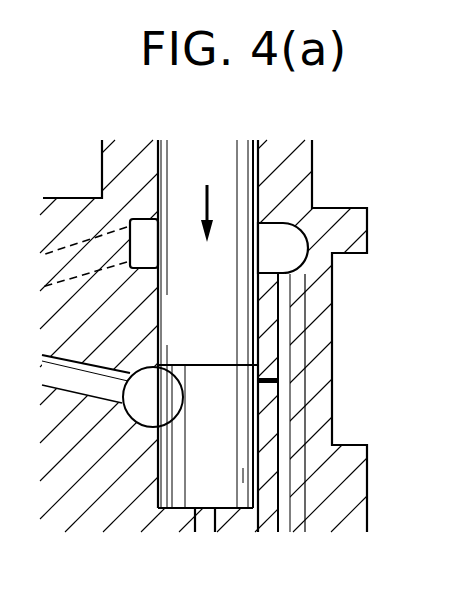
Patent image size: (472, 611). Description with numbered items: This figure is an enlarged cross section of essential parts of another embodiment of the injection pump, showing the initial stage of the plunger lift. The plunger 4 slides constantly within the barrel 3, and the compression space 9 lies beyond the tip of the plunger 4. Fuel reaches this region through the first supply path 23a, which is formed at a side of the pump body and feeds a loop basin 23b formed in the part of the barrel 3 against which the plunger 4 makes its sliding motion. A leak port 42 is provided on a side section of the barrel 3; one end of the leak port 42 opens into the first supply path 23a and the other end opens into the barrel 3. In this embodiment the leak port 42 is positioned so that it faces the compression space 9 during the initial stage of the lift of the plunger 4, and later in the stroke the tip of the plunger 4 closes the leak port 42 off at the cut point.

The plunger 4 is at (242, 160).
The loop basin 23b is at (284, 232).
The first supply path 23a is at (304, 402).
The leak port 42 is at (275, 381).
The barrel 3 is at (256, 447).
The compression space 9 is at (177, 498).